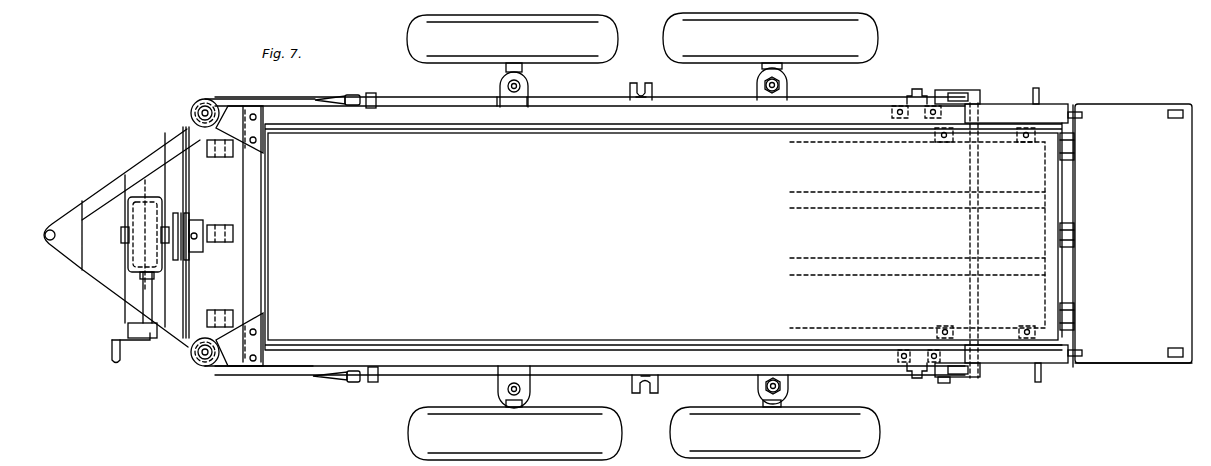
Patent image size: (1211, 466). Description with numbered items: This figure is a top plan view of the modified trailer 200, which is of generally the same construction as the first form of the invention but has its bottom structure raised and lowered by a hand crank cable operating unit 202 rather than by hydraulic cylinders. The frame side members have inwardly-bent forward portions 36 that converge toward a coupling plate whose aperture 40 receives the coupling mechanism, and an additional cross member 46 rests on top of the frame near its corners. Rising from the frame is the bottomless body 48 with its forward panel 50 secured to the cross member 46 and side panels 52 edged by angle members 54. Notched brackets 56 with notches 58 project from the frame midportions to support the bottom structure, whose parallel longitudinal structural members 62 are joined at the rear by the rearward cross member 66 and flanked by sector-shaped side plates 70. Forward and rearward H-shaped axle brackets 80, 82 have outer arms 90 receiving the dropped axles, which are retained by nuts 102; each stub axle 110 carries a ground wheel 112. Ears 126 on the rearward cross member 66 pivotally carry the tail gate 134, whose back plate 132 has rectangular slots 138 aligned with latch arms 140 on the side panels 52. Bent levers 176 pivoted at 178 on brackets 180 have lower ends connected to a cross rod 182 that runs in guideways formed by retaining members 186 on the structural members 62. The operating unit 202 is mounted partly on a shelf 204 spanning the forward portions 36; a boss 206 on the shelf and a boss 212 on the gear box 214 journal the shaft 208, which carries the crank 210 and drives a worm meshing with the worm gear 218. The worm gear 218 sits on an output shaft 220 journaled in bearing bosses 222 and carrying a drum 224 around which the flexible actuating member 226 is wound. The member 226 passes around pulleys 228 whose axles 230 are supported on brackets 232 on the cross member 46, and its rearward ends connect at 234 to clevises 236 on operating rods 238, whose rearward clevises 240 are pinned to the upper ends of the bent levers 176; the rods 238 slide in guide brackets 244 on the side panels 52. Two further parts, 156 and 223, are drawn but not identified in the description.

The forward portions 36 is at (98, 194).
The aperture 40 is at (50, 240).
The cross member 46 is at (246, 200).
The trailer body 48 is at (405, 372).
The forward panel 50 is at (268, 237).
The side panels 52 is at (540, 134).
The angle members 54 is at (588, 115).
The notched brackets 56 is at (654, 88).
The notches 58 is at (640, 88).
The longitudinal structural members 62 is at (882, 143).
The rearward structural cross member 66 is at (1044, 240).
The side plates 70 is at (706, 130).
The forward axle brackets 80 is at (498, 92).
The rearward axle brackets 82 is at (757, 92).
The outer arms 90 is at (522, 86).
The retaining nuts 102 is at (507, 86).
The stub axle 110 is at (520, 72).
The ground wheel 112 is at (562, 28).
The ears 126 is at (1068, 167).
The back plate 132 is at (1143, 116).
The tail gate 134 is at (1145, 364).
The rectangular slots 138 is at (1176, 110).
The latch arms 140 is at (1085, 112).
The pin 156 is at (1040, 101).
The bent levers 176 is at (978, 97).
The pivot 178 is at (917, 87).
The brackets 180 is at (891, 112).
The cross rod 182 is at (966, 244).
The retaining members 186 is at (958, 143).
The modified trailer 200 is at (174, 126).
The hand crank cable operating unit 202 is at (164, 465).
The shelf 204 is at (137, 173).
The boss 206 is at (128, 332).
The shaft 208 is at (143, 309).
The crank 210 is at (130, 347).
The boss 212 is at (130, 283).
The gear box 214 is at (128, 262).
The worm gear 218 is at (148, 200).
The output shaft 220 is at (182, 205).
The bearing bosses 222 is at (122, 235).
The gusset plate 223 is at (240, 348).
The drum 224 is at (196, 220).
The flexible actuating member 226 is at (314, 97).
The pulleys 228 is at (210, 99).
The axle 230 is at (205, 110).
The brackets 232 is at (238, 112).
The connection 234 is at (336, 98).
The clevises 236 is at (357, 98).
The operating rods 238 is at (546, 100).
The clevises 240 is at (942, 385).
The guide brackets 244 is at (377, 100).